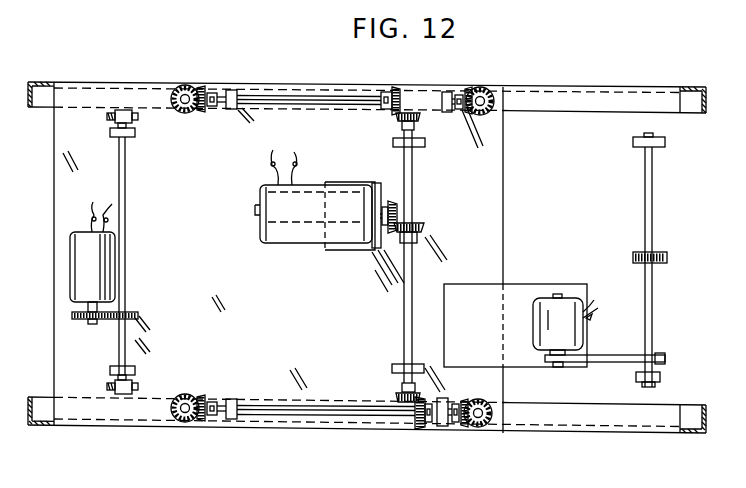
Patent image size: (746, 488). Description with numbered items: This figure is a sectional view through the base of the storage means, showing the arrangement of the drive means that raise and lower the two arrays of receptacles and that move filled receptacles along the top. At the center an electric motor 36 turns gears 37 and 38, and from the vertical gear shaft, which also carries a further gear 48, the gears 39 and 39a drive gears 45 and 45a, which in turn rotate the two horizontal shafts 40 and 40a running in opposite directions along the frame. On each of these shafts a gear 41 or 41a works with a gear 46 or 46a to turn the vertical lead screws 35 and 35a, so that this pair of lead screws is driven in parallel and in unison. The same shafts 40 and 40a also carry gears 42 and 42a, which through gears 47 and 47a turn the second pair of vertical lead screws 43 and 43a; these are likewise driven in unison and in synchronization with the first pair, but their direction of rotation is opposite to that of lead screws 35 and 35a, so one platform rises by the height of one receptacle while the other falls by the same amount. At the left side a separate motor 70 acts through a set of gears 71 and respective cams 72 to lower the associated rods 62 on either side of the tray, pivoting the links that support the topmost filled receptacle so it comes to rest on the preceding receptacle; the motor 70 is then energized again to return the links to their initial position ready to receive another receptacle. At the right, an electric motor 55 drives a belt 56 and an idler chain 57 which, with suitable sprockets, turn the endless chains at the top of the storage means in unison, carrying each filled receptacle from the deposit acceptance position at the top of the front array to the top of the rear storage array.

The vertical lead screw 35a is at (183, 86).
The gear 46a is at (201, 86).
The gear 41a is at (221, 91).
The shaft 40a is at (310, 101).
The gear 45a is at (396, 87).
The gear 42a is at (450, 91).
The vertical lead screw 43a is at (487, 90).
The gear 47a is at (488, 112).
The gear 39a is at (422, 119).
The gear 38 is at (413, 280).
The bevel gear 48 is at (423, 226).
The gear 37 is at (391, 200).
The electric motor 36 is at (272, 187).
The vertical lead screw 35 is at (185, 422).
The gear 46 is at (200, 395).
The gear 41 is at (212, 399).
The shaft 40 is at (286, 406).
The gear 45 is at (418, 430).
The gear 39 is at (400, 393).
The gear 42 is at (448, 427).
The gear 47 is at (472, 400).
The vertical lead screw 43 is at (476, 427).
The cam 72 is at (112, 118).
The rod 62 is at (130, 128).
The motor 70 is at (82, 260).
The gears 71 is at (138, 314).
The idler chain 57 is at (634, 257).
The electric motor 55 is at (570, 298).
The belt 56 is at (610, 355).